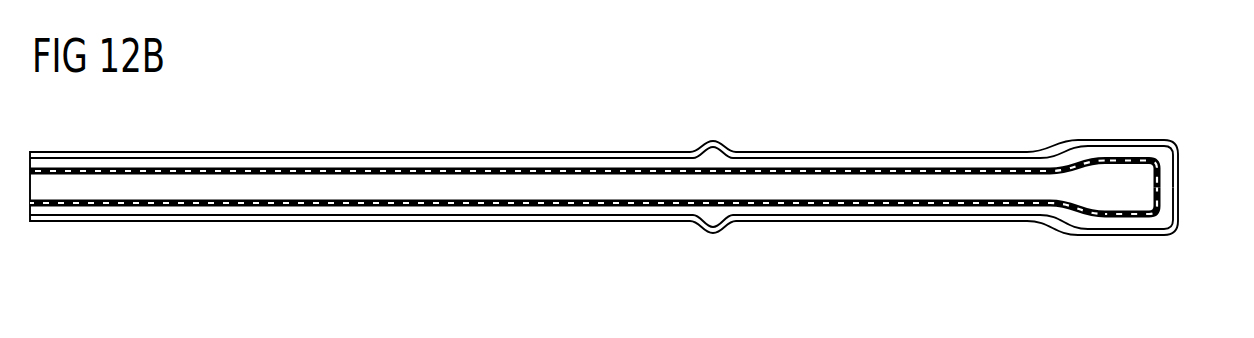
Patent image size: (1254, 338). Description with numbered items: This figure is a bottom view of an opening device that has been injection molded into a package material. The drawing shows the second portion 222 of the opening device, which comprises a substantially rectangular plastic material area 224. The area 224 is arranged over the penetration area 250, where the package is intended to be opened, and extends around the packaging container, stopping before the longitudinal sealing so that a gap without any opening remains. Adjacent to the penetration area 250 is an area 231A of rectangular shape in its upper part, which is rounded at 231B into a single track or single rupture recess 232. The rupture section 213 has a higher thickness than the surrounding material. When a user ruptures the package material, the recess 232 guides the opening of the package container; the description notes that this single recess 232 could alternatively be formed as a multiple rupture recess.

The penetration area 250 is at (1172, 118).
The second portion 222 is at (980, 126).
The rupture section 213 is at (790, 212).
The plastic material area 224 is at (858, 187).
The single rupture recess 232 is at (893, 205).
The area 231A is at (1110, 190).
The rounded portion 231B is at (1072, 207).